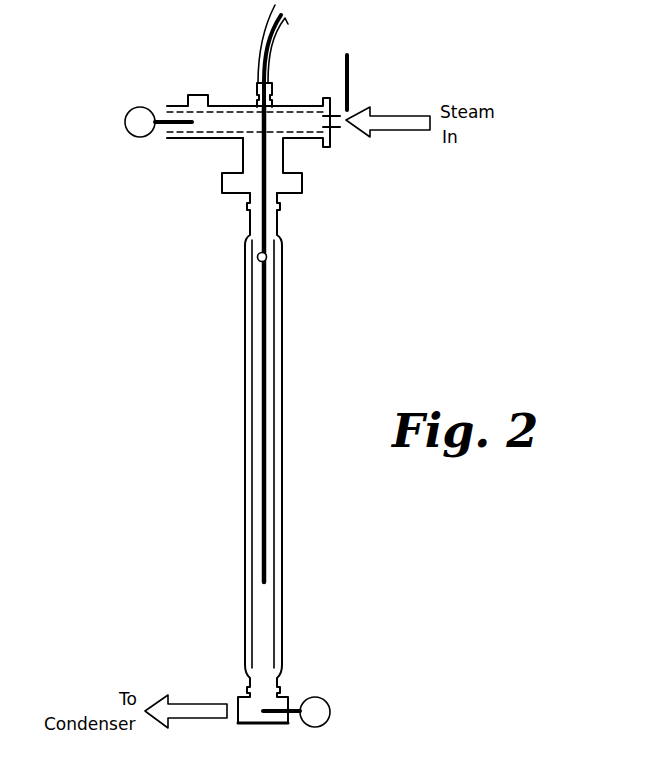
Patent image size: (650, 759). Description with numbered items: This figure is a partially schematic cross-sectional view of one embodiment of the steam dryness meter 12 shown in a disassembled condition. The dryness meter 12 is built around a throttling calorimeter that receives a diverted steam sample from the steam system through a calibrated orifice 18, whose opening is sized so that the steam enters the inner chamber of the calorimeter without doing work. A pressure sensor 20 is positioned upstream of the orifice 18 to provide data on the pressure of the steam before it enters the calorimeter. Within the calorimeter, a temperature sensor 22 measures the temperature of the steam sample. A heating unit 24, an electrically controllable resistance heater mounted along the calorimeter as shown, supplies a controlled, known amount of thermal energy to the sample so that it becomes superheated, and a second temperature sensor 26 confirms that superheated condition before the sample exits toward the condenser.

The steam dryness meter 12 is at (208, 425).
The calibrated orifice 18 is at (334, 130).
The pressure sensor 20 is at (349, 82).
The temperature sensor 22 is at (163, 126).
The heating unit 24 is at (267, 257).
The second temperature sensor 26 is at (328, 700).